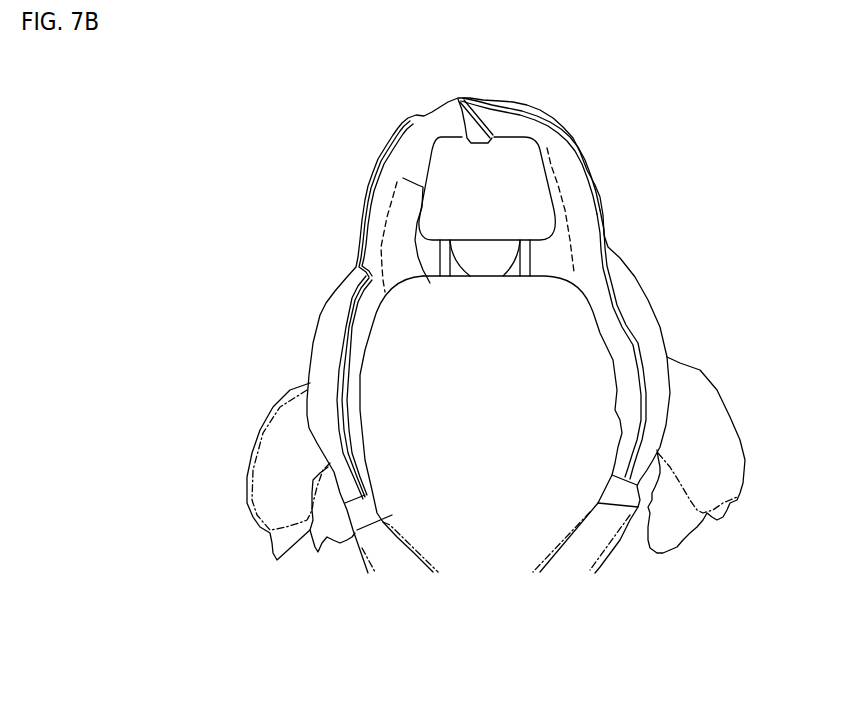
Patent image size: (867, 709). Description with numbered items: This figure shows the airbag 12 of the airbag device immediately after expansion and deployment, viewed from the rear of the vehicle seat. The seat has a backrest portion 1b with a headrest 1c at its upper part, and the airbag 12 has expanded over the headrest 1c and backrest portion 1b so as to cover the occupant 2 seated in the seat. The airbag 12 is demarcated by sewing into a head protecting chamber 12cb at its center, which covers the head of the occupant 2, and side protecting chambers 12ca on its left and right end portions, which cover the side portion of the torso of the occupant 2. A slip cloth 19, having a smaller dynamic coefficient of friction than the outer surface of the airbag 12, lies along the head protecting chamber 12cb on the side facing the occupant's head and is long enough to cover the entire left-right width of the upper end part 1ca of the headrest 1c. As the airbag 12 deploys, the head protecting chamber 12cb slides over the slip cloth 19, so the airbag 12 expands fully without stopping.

The airbag 12 is at (553, 112).
The head protecting chamber 12cb is at (407, 127).
The side protecting chamber 12ca is at (643, 303).
The upper end part of the headrest 1ca is at (508, 134).
The slip cloth 19 is at (569, 146).
The headrest 1c is at (522, 213).
The occupant 2 is at (493, 262).
The backrest portion 1b is at (560, 348).